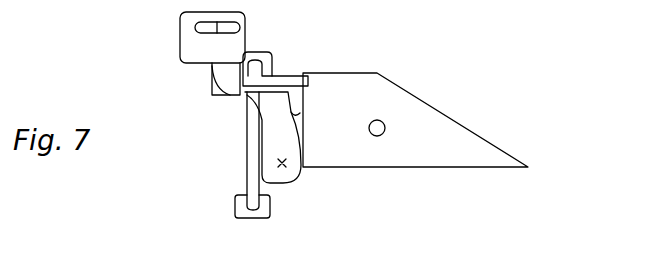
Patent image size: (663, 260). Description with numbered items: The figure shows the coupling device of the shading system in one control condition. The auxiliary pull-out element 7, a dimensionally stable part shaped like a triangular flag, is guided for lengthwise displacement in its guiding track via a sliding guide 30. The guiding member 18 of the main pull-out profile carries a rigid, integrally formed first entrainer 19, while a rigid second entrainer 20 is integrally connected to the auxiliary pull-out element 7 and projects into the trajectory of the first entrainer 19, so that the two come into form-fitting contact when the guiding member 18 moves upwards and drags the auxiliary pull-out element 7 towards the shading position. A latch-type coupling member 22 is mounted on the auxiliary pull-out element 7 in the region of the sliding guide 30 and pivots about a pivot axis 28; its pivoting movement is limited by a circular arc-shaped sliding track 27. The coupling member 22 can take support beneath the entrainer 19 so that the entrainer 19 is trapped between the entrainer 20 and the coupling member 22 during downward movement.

The auxiliary pull-out element 7 is at (388, 88).
The guiding member 18 is at (185, 48).
The first entrainer 19 is at (243, 96).
The second entrainer 20 is at (256, 78).
The coupling member 22 is at (278, 137).
The sliding track 27 is at (293, 115).
The pivot axis 28 is at (284, 164).
The sliding guide 30 is at (243, 176).